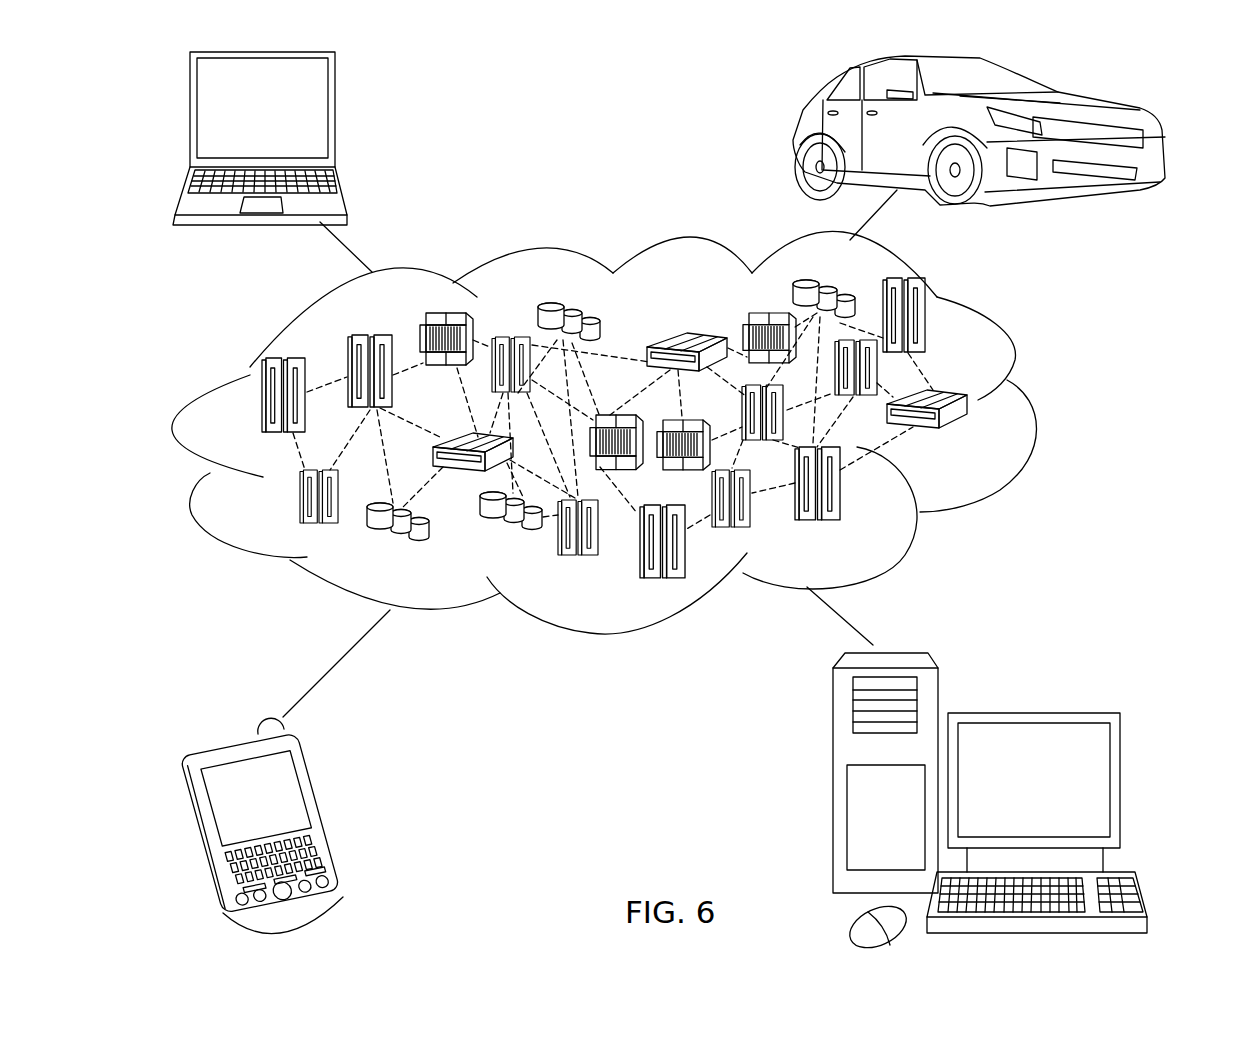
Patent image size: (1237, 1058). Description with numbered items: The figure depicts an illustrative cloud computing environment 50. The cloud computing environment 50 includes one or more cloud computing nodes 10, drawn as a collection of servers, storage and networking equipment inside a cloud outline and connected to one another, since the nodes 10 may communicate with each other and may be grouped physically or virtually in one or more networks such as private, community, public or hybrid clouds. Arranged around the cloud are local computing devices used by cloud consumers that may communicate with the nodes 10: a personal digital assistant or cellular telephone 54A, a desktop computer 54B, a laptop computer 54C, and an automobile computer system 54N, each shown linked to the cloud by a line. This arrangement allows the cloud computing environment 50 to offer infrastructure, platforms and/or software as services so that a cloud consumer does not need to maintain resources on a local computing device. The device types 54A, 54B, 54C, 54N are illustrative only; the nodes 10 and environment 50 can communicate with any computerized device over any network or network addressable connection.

The cloud computing node 10 is at (970, 438).
The cloud computing environment 50 is at (1032, 405).
The personal digital assistant (PDA) or cellular telephone 54A is at (322, 812).
The desktop computer 54B is at (1030, 713).
The laptop computer 54C is at (335, 116).
The automobile computer system 54N is at (797, 129).